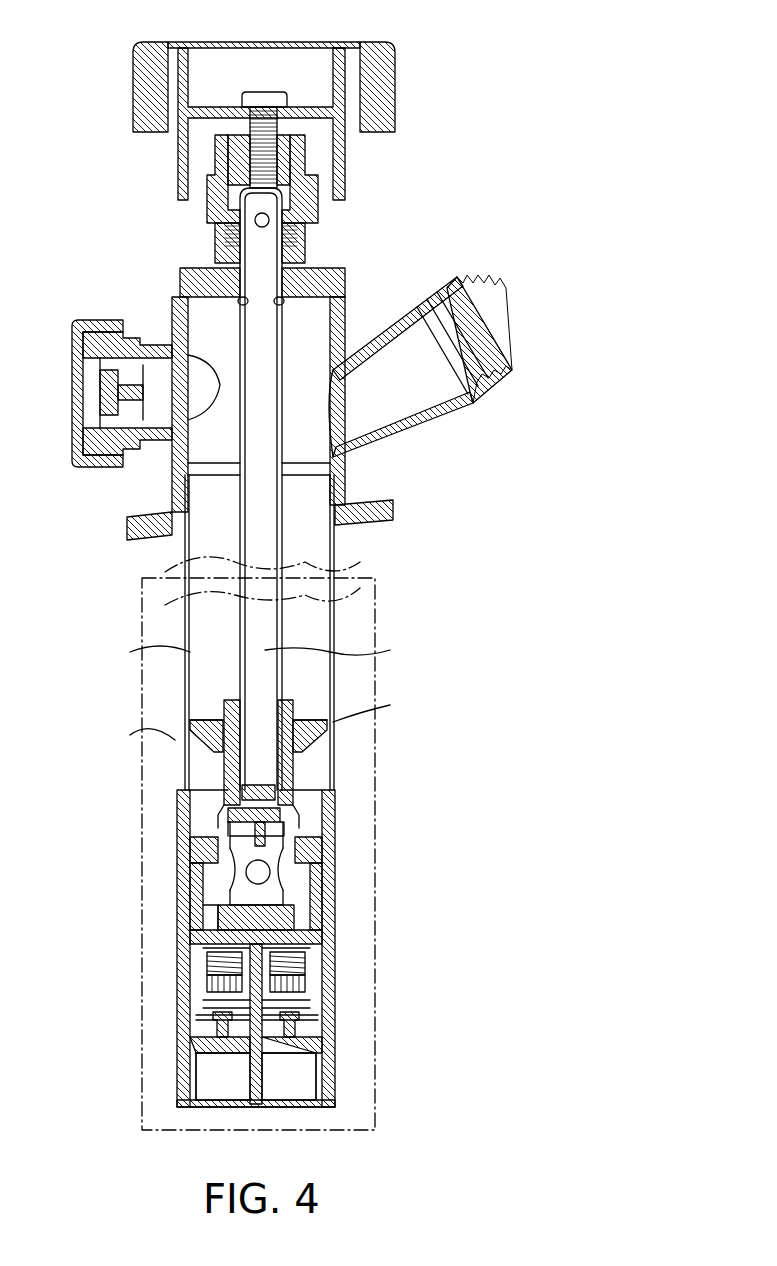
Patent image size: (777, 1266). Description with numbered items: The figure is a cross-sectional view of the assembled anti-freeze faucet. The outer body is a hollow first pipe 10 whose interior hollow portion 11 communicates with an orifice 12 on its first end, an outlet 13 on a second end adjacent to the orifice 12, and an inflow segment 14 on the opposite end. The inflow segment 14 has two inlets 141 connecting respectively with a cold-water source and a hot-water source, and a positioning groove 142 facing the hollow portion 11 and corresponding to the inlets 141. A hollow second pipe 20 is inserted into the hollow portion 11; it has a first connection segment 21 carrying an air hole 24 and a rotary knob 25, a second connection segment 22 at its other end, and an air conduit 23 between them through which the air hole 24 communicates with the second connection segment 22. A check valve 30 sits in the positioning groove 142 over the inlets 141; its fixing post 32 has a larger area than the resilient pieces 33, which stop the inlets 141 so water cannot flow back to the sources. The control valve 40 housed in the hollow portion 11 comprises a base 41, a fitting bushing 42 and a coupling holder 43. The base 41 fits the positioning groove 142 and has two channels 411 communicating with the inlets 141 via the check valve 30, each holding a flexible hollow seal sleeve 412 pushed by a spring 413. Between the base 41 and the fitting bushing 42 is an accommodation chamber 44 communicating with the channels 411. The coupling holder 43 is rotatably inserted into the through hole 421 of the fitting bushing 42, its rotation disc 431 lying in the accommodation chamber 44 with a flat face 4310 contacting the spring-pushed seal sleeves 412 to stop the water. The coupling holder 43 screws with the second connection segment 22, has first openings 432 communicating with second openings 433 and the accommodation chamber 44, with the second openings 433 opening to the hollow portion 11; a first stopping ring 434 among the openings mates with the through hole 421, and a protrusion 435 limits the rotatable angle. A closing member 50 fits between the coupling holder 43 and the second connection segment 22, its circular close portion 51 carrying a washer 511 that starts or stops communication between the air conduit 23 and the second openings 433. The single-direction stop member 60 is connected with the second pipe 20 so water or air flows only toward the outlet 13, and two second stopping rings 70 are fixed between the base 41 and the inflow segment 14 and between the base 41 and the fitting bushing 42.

The first pipe 10 is at (178, 623).
The hollow portion 11 is at (215, 643).
The orifice 12 is at (176, 294).
The outlet 13 is at (476, 334).
The inflow segment 14 is at (325, 1028).
The second pipe 20 is at (292, 622).
The first connection segment 21 is at (277, 168).
The second connection segment 22 is at (305, 752).
The air conduit 23 is at (262, 650).
The air hole 24 is at (269, 221).
The rotary knob 25 is at (396, 48).
The check valve 30 is at (330, 1040).
The fixing post 32 is at (200, 1010).
The resilient pieces 33 is at (215, 1022).
The control valve 40 is at (340, 975).
The base 41 is at (322, 1013).
The channels 411 is at (330, 995).
The seal sleeve 412 is at (320, 937).
The spring 413 is at (205, 965).
The fitting bushing 42 is at (337, 838).
The through hole 421 is at (300, 824).
The coupling holder 43 is at (293, 787).
The rotation disc 431 is at (205, 946).
The first openings 432 is at (230, 873).
The second openings 433 is at (225, 826).
The first stopping ring 434 is at (240, 836).
The protrusion 435 is at (315, 912).
The flat face 4310 is at (300, 985).
The accommodation chamber 44 is at (217, 893).
The closing member 50 is at (290, 793).
The circular close portion 51 is at (225, 817).
The washer 511 is at (227, 800).
The single-direction stop member 60 is at (190, 681).
The second stopping rings 70 is at (205, 912).
The inlets 141 is at (215, 1085).
The positioning groove 142 is at (193, 1046).